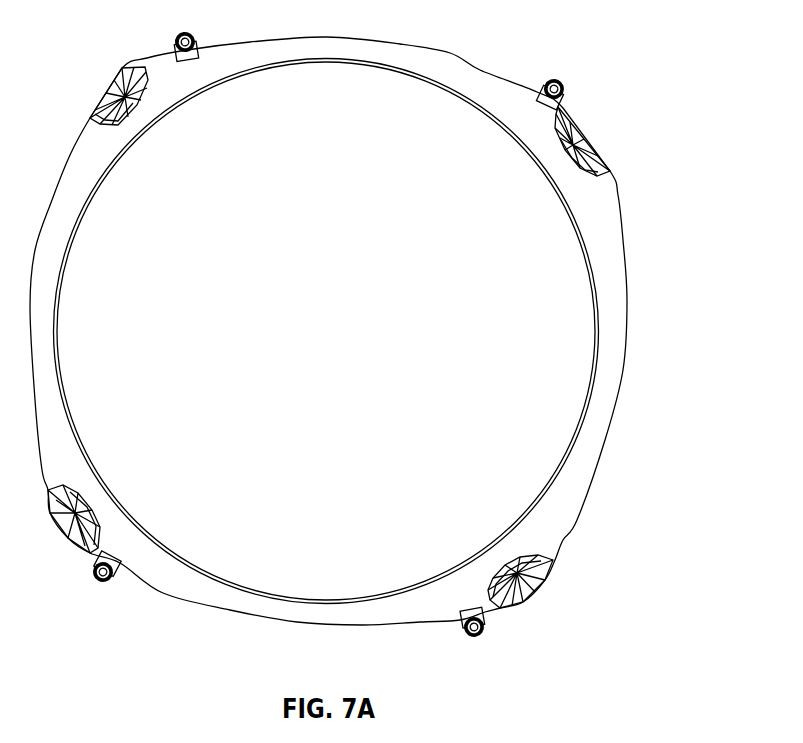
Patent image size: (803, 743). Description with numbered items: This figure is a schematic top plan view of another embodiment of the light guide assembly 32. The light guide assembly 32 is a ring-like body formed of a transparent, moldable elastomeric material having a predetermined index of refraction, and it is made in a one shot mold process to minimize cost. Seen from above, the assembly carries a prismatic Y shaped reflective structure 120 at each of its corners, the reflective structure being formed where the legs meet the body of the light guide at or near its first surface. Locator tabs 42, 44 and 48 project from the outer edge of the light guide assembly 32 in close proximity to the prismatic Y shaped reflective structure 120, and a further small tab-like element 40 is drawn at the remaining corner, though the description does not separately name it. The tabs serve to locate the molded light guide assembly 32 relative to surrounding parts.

The light guide assembly 32 is at (652, 347).
The mounting lug 40 is at (103, 583).
The locator tab 42 is at (566, 90).
The locator tab 44 is at (477, 638).
The locator tab 48 is at (184, 32).
The prismatic Y shaped reflective structure 120 is at (608, 158).